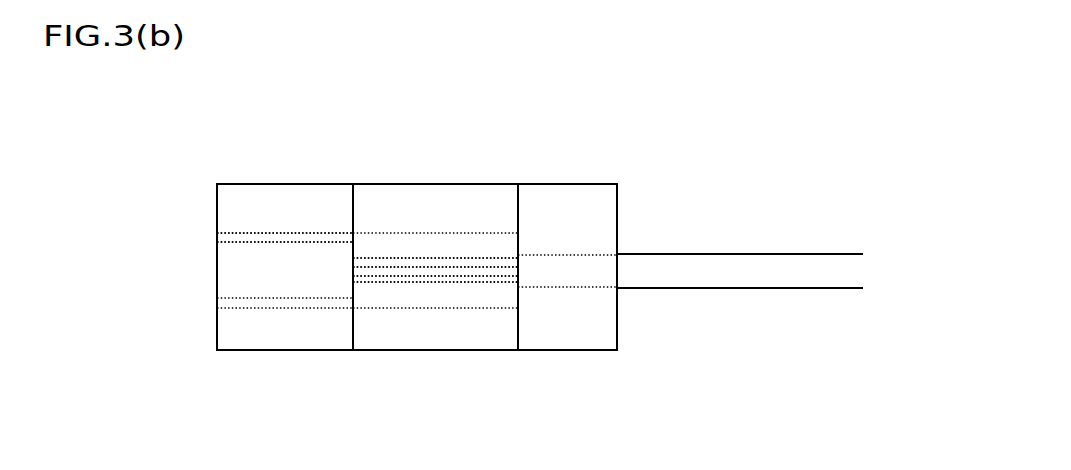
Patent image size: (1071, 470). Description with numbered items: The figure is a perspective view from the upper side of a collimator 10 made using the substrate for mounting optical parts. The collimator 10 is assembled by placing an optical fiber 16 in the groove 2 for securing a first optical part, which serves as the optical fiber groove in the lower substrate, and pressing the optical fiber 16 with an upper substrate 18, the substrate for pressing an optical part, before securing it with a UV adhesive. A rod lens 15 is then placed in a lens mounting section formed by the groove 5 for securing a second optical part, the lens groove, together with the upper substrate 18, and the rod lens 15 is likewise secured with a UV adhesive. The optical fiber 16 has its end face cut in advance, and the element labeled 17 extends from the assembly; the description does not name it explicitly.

The collimator 10 is at (484, 368).
The rod lens 15 is at (259, 252).
The groove for securing a second optical part 5 is at (292, 222).
The optical fiber 16 is at (401, 255).
The groove for securing a first optical part 2 is at (494, 249).
The optical fiber 17 is at (666, 262).
The upper substrate 18 is at (609, 325).